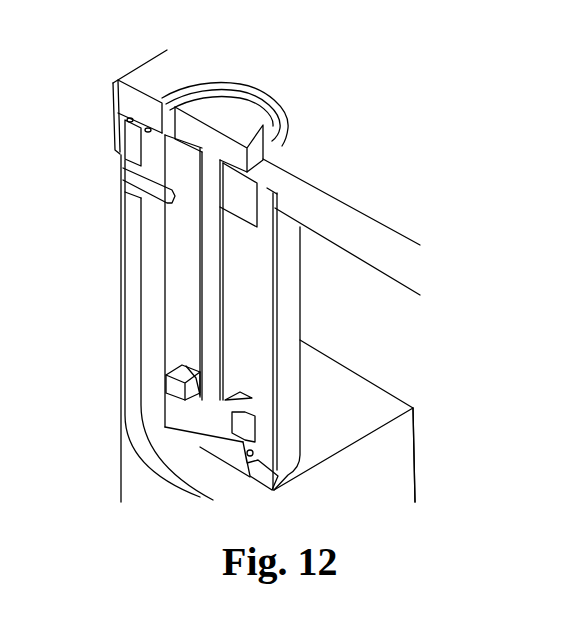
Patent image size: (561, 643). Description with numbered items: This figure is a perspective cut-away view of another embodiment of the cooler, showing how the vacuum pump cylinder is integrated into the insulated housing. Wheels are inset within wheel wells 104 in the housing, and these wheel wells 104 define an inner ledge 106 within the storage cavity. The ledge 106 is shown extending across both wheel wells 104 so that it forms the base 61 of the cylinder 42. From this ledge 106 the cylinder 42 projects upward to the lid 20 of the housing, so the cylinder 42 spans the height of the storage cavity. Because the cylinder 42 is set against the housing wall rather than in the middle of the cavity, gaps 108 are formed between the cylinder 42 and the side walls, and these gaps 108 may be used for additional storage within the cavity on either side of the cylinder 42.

The lid 20 is at (140, 108).
The cylinder 42 is at (180, 277).
The base of the cylinder 61 is at (210, 410).
The wheel well 104 is at (373, 490).
The inner ledge 106 is at (347, 408).
The gap 108 is at (478, 330).